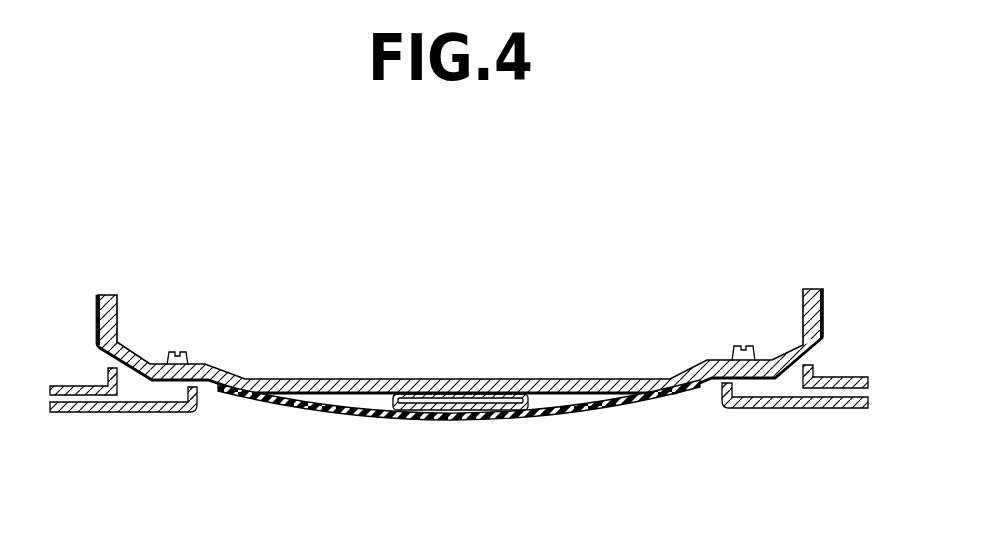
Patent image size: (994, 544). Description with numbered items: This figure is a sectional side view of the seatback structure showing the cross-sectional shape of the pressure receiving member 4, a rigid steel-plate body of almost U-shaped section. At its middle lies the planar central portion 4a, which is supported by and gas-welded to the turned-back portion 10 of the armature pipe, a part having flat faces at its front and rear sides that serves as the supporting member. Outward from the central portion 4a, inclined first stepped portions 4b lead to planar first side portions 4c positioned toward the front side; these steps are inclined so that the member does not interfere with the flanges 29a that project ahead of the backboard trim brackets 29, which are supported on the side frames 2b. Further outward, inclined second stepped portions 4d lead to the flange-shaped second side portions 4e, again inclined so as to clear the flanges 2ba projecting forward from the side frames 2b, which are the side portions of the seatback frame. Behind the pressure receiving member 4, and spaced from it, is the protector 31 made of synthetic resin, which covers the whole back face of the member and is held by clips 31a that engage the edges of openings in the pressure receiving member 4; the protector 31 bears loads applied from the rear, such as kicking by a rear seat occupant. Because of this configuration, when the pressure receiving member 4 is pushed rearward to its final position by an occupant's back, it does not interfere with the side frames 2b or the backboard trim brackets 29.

The pressure receiving member 4 is at (481, 289).
The central portion 4a is at (522, 378).
The first stepped portions 4b is at (238, 370).
The first side portions 4c is at (208, 365).
The second stepped portions 4d is at (133, 357).
The second side portions 4e is at (97, 297).
The clips 31a is at (172, 352).
The protector 31 is at (567, 420).
The turned-back portion 10 is at (437, 420).
The side frames 2b is at (463, 431).
The flanges 2ba is at (138, 388).
The backboard trim brackets 29 is at (459, 442).
The flanges 29a is at (207, 400).